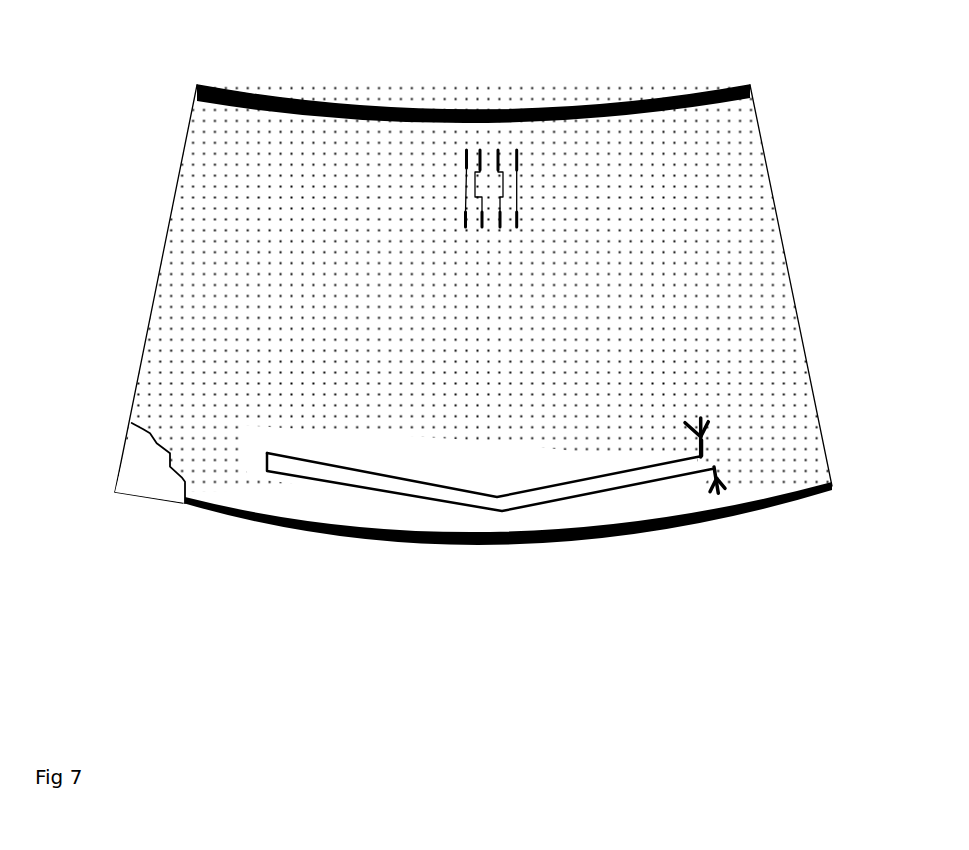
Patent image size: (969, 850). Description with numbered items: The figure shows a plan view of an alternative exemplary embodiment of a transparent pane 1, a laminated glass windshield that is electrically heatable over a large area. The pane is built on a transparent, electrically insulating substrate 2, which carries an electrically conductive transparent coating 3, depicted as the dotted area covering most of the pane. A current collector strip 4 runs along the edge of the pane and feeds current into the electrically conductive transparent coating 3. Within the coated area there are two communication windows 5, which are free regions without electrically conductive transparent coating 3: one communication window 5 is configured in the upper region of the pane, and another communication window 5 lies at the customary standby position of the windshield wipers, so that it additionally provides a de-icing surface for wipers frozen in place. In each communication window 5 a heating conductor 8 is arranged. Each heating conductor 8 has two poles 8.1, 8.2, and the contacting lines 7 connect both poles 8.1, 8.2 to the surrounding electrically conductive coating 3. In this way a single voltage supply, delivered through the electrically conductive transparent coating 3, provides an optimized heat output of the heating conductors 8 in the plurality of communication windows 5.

The transparent pane 1 is at (451, 309).
The transparent electrically insulating substrate 2 is at (142, 450).
The electrically conductive transparent coating 3 is at (207, 183).
The current collector strip 4 is at (245, 95).
The communication window 5 is at (467, 150).
The contacting line 7 is at (553, 118).
The heating conductor 8 is at (521, 182).
The first pole of the heating conductor 8.1 is at (514, 202).
The second pole of the heating conductor 8.2 is at (517, 138).